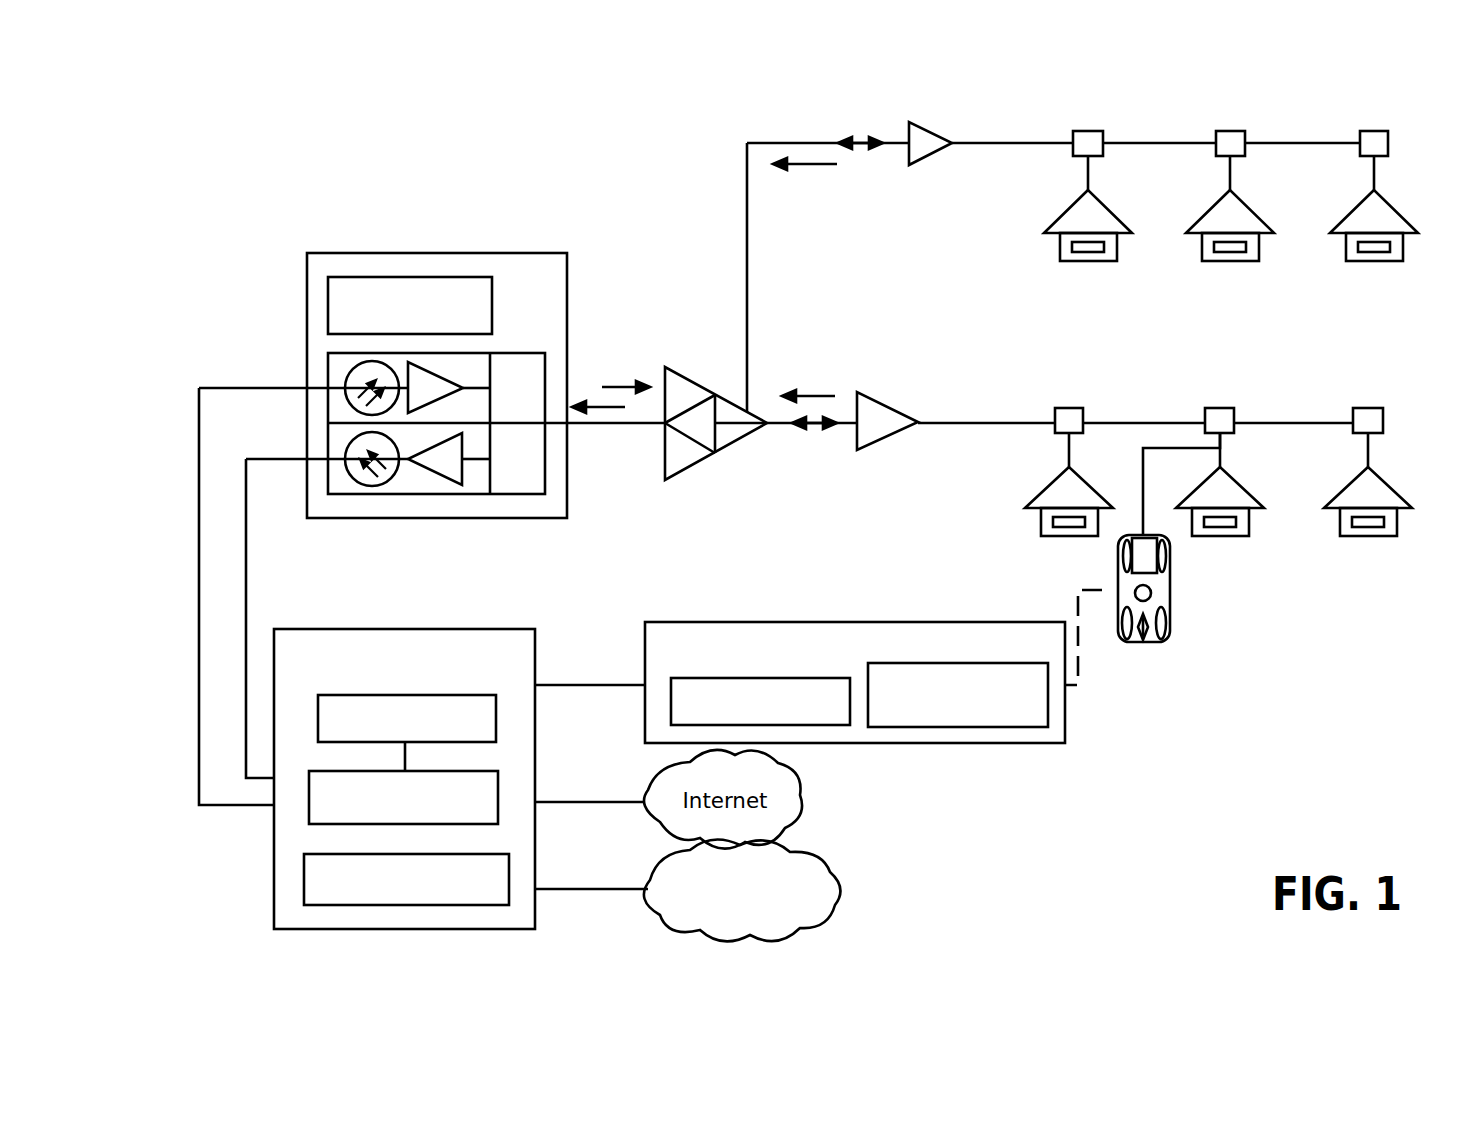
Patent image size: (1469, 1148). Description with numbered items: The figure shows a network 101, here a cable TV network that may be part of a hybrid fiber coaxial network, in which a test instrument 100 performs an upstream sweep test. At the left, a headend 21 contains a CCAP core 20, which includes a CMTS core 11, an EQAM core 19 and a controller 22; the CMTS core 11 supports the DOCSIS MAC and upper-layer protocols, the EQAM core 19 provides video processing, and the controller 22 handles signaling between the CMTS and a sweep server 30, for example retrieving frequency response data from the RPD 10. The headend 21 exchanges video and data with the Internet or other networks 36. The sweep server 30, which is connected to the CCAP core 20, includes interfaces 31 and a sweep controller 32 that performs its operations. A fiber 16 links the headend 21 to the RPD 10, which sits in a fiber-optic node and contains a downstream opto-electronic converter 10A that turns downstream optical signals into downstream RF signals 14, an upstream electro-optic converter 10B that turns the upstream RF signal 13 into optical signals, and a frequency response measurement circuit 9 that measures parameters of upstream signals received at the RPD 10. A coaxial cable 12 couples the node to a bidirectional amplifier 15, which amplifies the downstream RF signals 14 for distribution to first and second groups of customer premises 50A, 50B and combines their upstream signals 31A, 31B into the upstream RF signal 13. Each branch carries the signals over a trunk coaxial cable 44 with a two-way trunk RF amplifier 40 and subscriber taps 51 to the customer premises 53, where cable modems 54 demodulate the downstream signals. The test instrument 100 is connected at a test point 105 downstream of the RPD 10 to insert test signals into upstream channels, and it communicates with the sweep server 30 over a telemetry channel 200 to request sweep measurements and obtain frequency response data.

The network 101 is at (655, 118).
The RPD 10 is at (387, 253).
The frequency response measurement circuit 9 is at (492, 277).
The downstream opto-electronic converter 10A is at (500, 353).
The upstream electro-optic converter 10B is at (397, 494).
The fiber 16 is at (168, 585).
The coaxial cable 12 is at (640, 428).
The upstream RF signal 13 is at (578, 402).
The downstream RF signals 14 is at (613, 383).
The bidirectional amplifier 15 is at (677, 366).
The upstream signals 31A is at (816, 175).
The upstream signals 31B is at (808, 388).
The trunk coaxial cable 44 is at (1012, 141).
The two-way trunk RF amplifier 40 is at (940, 155).
The subscriber tap 51 is at (1199, 298).
The test point 105 is at (1210, 407).
The customer premises 53 is at (1047, 229).
The cable modem 54 is at (1060, 247).
The first group of customer premises 50A is at (1157, 267).
The second group of customer premises 50B is at (1242, 328).
The test instrument 100 is at (1170, 600).
The telemetry channel 200 is at (1078, 650).
The headend 21 is at (352, 629).
The CCAP core 20 is at (406, 780).
The controller 22 is at (407, 718).
The CMTS core 11 is at (403, 797).
The EQAM core 19 is at (406, 879).
The sweep server 30 is at (855, 682).
The interfaces 31 is at (760, 701).
The sweep controller 32 is at (958, 695).
The Internet or other networks 36 is at (815, 868).